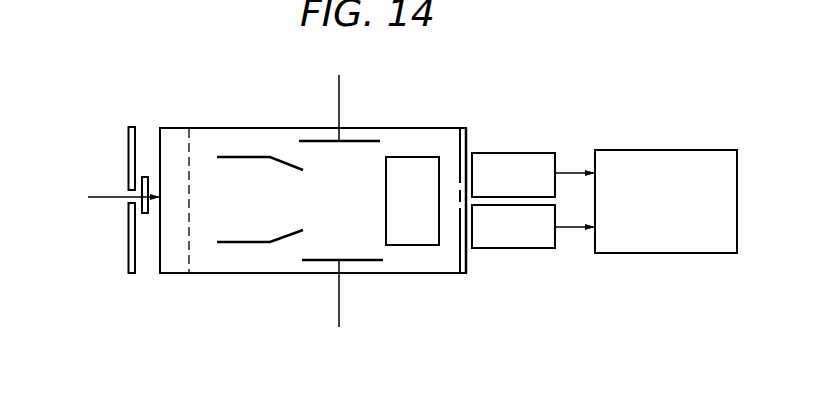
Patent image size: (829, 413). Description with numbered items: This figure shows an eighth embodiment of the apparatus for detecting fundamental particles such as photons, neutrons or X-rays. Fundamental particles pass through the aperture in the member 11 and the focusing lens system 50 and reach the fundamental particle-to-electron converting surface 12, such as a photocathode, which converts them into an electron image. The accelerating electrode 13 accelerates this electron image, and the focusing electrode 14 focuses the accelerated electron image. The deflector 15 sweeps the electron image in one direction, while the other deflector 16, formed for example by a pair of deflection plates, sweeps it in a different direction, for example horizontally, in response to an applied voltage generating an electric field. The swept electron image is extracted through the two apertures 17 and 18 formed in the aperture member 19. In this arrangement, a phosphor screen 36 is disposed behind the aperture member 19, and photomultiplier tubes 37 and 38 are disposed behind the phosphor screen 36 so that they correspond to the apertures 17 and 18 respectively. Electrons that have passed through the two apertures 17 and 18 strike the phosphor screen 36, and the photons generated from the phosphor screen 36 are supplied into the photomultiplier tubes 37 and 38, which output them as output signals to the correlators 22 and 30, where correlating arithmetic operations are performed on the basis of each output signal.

The member 11 is at (130, 279).
The focusing lens system 50 is at (143, 176).
The fundamental particle-to-electron converting surface 12 is at (160, 260).
The accelerating electrode 13 is at (189, 254).
The focusing electrode 14 is at (241, 244).
The deflector 15 is at (317, 263).
The deflector 16 is at (413, 247).
The aperture 17 is at (457, 184).
The aperture 18 is at (458, 212).
The aperture member 19 is at (459, 148).
The phosphor screen 36 is at (467, 143).
The photomultiplier tube 37 is at (530, 152).
The photomultiplier tube 38 is at (515, 250).
The correlator 22 is at (647, 149).
The correlator 30 is at (666, 201).